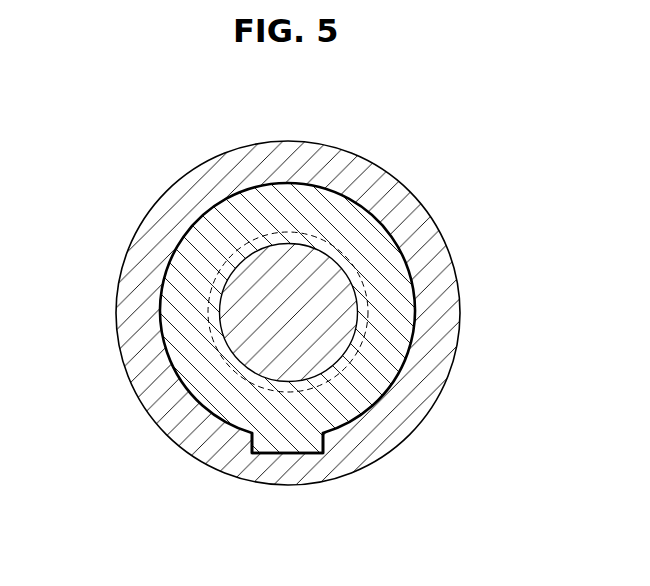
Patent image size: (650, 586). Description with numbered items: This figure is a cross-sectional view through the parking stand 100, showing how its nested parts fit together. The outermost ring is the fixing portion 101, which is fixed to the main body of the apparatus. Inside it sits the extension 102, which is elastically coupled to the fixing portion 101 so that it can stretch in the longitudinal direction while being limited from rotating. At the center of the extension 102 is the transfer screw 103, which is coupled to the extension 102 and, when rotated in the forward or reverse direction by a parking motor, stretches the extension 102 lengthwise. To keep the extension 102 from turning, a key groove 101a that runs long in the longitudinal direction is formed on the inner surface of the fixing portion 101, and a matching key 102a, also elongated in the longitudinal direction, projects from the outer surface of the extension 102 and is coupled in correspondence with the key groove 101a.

The parking stand 100 is at (431, 192).
The fixing portion 101 is at (206, 180).
The key groove 101a is at (298, 453).
The extension 102 is at (404, 265).
The key 102a is at (265, 444).
The transfer screw 103 is at (245, 289).